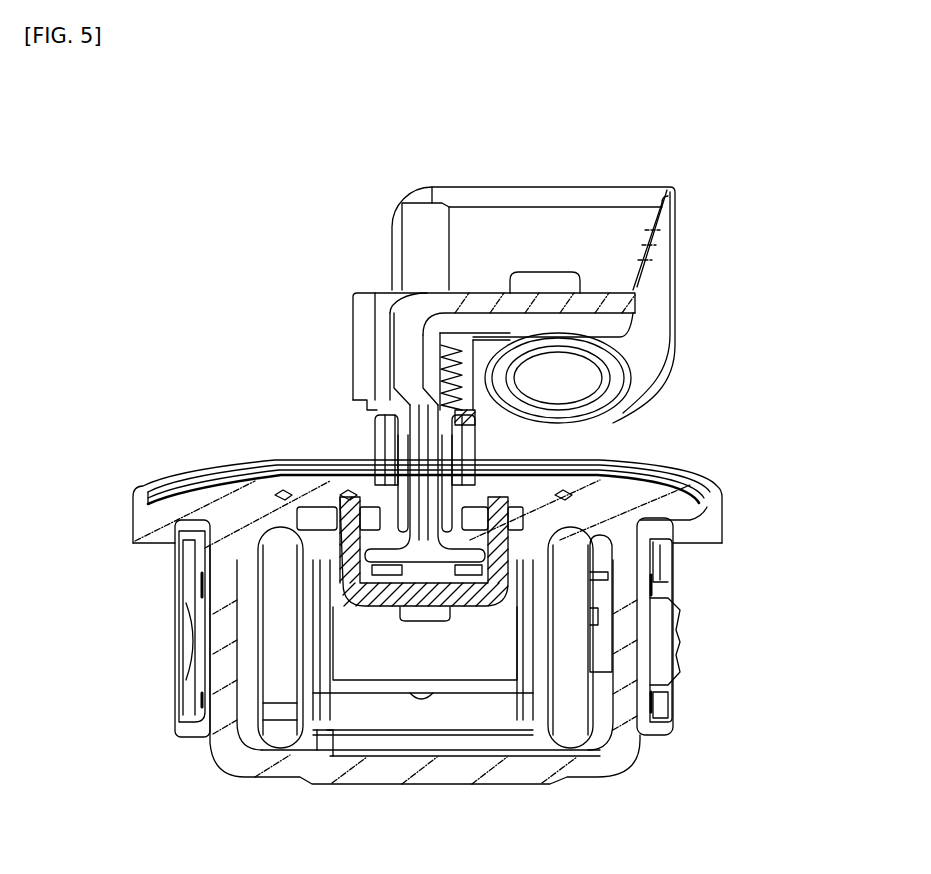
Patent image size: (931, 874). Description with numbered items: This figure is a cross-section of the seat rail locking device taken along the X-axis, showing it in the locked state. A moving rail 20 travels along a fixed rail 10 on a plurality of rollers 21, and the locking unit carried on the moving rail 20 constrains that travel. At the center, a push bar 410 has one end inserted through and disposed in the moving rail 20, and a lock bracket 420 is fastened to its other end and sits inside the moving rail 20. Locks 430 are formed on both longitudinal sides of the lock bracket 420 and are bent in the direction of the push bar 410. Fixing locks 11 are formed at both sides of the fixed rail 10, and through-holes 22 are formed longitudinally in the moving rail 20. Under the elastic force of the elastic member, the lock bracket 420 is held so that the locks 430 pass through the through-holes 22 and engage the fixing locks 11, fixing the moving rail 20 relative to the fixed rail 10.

The fixed rail 10 is at (613, 760).
The fixing lock 11 is at (337, 462).
The moving rail 20 is at (393, 355).
The roller 21 is at (567, 730).
The through-hole 22 is at (200, 580).
The push bar 410 is at (412, 243).
The lock bracket 420 is at (367, 607).
The lock 430 is at (340, 495).